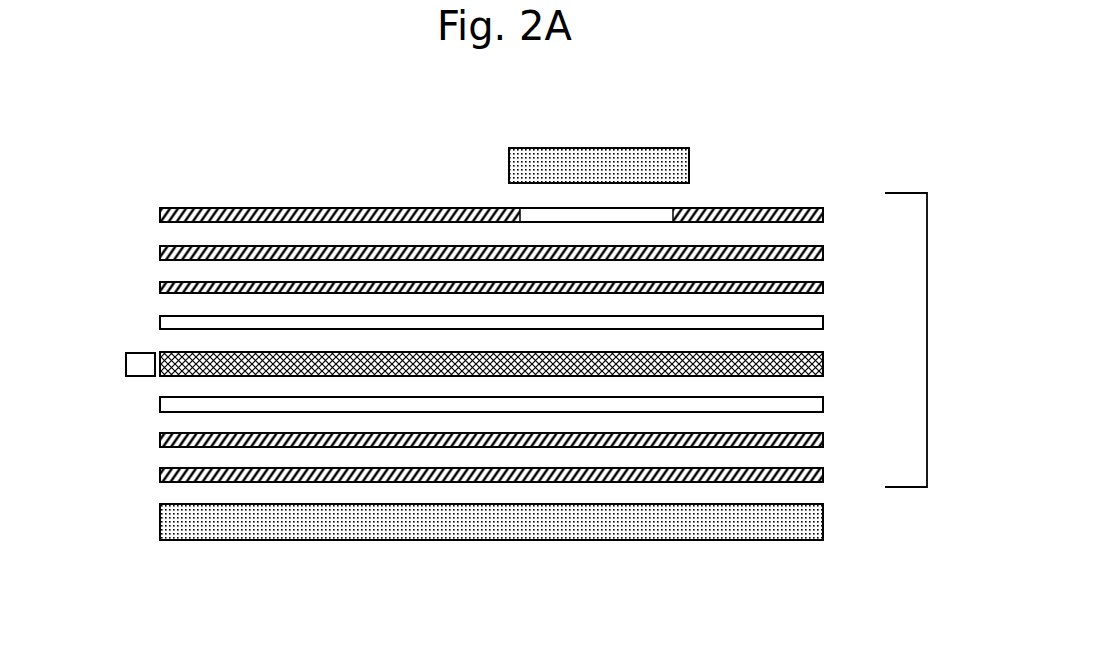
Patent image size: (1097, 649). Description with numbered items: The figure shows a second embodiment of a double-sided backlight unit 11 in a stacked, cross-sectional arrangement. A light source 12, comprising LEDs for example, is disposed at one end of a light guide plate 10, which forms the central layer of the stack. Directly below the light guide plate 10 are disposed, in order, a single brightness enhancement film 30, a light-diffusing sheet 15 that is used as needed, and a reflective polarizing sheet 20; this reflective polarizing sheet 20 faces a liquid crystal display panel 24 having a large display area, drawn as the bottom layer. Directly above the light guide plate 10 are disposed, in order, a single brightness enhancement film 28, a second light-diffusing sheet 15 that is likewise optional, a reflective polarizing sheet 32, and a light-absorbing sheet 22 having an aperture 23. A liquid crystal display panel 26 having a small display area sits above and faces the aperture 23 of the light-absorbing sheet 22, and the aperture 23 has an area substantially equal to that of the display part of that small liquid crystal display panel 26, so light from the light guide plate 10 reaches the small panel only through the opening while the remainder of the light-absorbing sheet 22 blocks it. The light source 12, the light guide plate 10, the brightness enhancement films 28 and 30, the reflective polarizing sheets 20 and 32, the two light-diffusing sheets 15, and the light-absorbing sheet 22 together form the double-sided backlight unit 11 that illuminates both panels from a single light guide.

The light guide plate 10 is at (823, 356).
The double-sided backlight unit 11 is at (927, 450).
The light source 12 is at (126, 362).
The light-diffusing sheet 15 is at (823, 283).
The reflective polarizing sheet 20 is at (823, 470).
The light-absorbing sheet 22 is at (367, 208).
The aperture 23 is at (568, 208).
The liquid crystal display panel 24 is at (823, 507).
The liquid crystal display panel 26 is at (588, 157).
The brightness enhancement film 28 is at (823, 318).
The brightness enhancement film 30 is at (823, 399).
The reflective polarizing sheet 32 is at (823, 248).